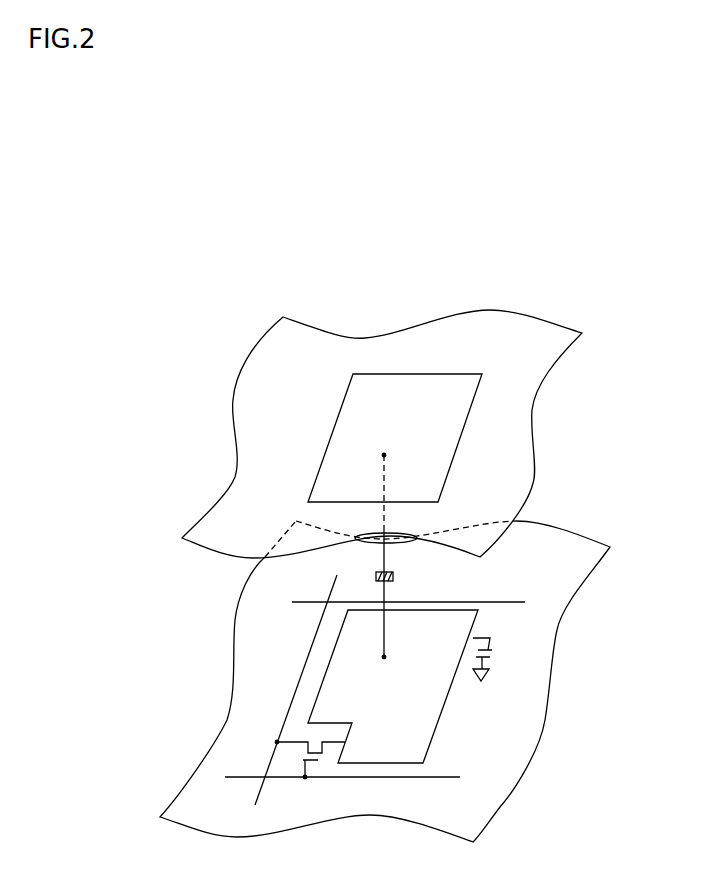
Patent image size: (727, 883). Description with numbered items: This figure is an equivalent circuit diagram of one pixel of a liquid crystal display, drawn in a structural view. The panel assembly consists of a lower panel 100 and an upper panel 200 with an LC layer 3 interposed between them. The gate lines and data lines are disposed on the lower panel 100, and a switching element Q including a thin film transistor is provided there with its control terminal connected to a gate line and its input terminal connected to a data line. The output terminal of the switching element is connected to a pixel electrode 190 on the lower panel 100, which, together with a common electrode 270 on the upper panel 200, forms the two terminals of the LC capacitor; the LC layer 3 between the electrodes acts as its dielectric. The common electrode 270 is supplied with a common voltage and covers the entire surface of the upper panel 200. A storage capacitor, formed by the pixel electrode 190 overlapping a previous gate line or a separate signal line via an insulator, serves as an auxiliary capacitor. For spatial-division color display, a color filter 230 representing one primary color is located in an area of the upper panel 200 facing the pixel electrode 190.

The LC layer 3 is at (176, 611).
The lower panel 100 is at (394, 681).
The pixel electrode 190 is at (442, 722).
The upper panel 200 is at (397, 434).
The color filter 230 is at (460, 447).
The common electrode 270 is at (532, 417).